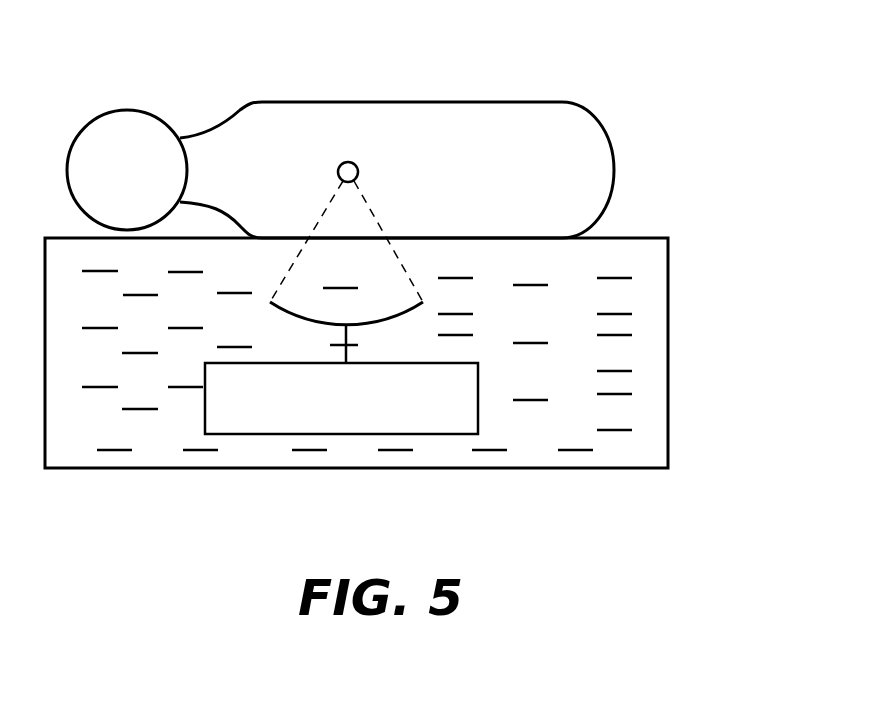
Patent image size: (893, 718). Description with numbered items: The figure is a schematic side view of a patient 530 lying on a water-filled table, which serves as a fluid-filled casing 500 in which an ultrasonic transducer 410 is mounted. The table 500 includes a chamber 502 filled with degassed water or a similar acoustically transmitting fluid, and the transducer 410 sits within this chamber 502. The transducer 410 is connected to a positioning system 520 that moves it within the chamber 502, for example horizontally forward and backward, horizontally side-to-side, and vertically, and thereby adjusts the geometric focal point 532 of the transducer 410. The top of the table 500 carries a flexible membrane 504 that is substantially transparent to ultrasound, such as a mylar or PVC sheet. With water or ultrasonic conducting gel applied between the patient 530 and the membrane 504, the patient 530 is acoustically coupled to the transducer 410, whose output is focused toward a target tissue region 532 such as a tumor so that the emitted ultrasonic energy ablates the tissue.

The fluid-filled casing 500 is at (673, 382).
The chamber 502 is at (110, 310).
The flexible membrane 504 is at (630, 238).
The patient 530 is at (253, 116).
The target tissue region 532 is at (353, 161).
The transducer 410 is at (270, 302).
The positioning system 520 is at (433, 434).